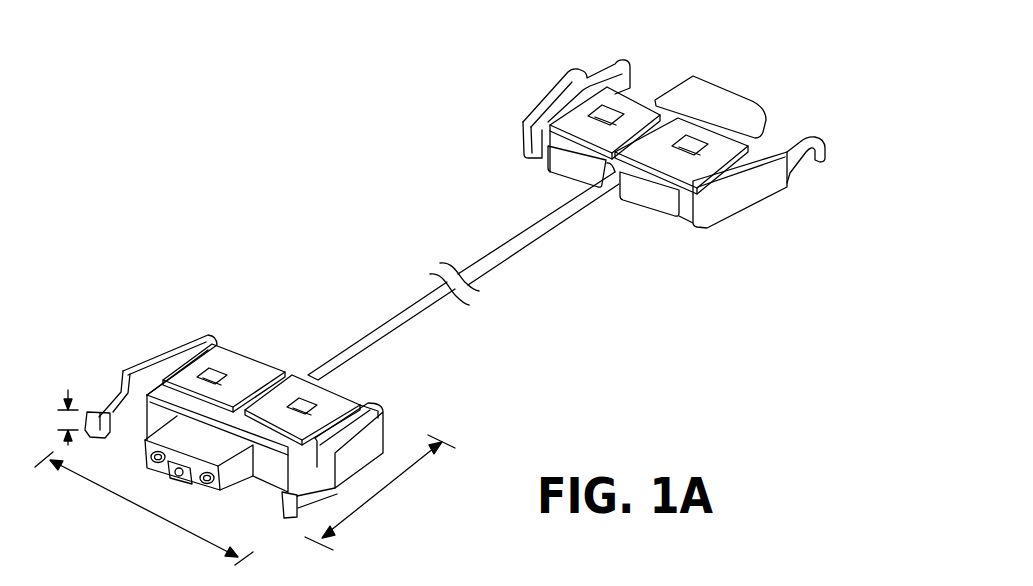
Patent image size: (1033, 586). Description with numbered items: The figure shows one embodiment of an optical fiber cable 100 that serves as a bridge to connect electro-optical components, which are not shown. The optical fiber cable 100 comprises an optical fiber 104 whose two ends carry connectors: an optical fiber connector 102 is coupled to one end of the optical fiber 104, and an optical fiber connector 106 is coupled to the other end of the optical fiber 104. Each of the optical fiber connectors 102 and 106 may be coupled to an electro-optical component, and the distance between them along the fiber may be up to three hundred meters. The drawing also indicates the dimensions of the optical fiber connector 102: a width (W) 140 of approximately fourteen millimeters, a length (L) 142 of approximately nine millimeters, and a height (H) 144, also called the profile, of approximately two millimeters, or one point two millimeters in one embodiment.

The optical fiber cable 100 is at (729, 408).
The optical fiber connector 102 is at (235, 348).
The optical fiber 104 is at (400, 313).
The optical fiber connector 106 is at (700, 88).
The width (W) 140 is at (128, 502).
The length (L) 142 is at (368, 498).
The height (H) 144 is at (62, 418).